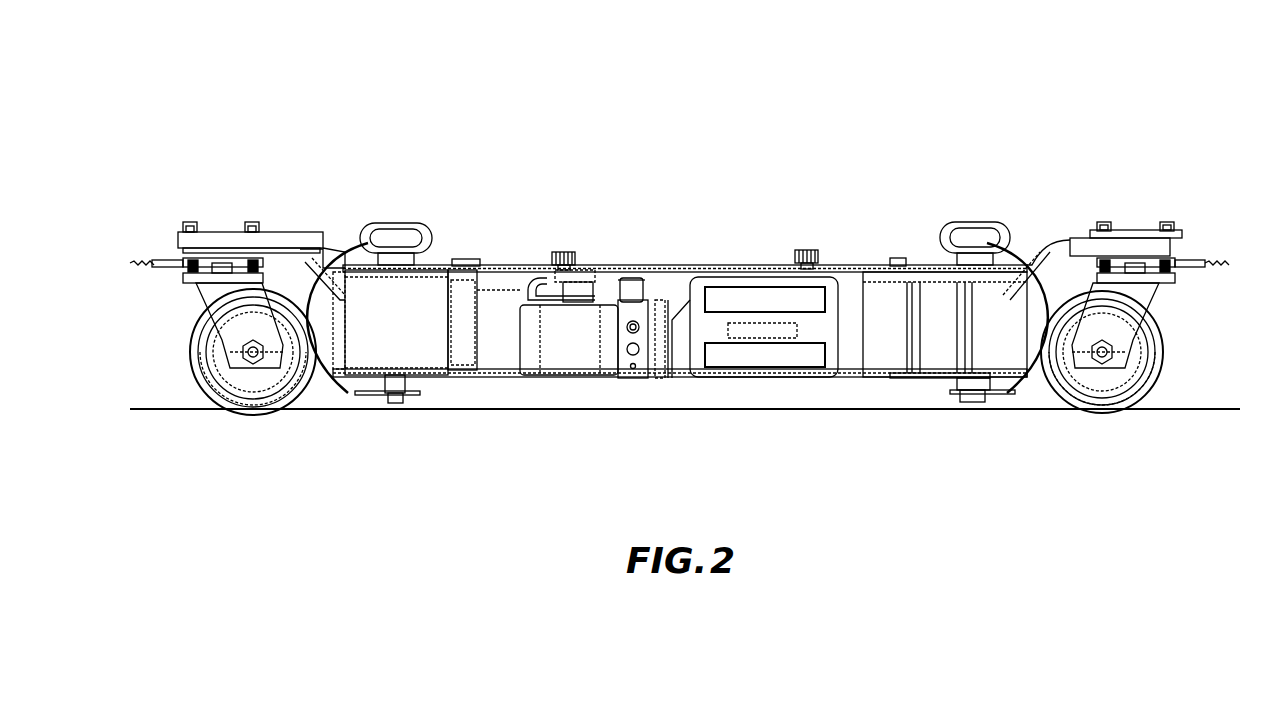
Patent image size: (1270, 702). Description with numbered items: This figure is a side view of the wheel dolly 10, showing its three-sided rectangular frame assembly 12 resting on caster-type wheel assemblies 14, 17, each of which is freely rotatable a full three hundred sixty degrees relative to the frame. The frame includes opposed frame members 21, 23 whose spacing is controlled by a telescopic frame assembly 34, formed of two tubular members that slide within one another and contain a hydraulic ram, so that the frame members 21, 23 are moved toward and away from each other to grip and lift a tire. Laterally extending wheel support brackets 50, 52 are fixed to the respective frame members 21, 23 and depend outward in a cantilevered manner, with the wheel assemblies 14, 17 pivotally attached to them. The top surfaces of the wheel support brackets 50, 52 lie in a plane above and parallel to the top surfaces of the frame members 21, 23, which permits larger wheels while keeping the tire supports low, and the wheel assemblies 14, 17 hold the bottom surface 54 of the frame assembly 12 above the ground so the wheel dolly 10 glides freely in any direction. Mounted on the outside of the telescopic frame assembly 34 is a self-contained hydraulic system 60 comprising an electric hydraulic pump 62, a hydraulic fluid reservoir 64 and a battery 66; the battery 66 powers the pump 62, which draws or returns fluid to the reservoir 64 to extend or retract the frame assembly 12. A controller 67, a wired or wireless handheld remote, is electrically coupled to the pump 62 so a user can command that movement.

The wheel dolly 10 is at (848, 140).
The frame assembly 12 is at (497, 280).
The wheel assembly 14 is at (237, 304).
The wheel assembly 17 is at (1157, 308).
The frame member 21 is at (358, 343).
The frame member 23 is at (1027, 343).
The telescopic frame assembly 34 is at (497, 342).
The wheel support bracket 50 is at (288, 240).
The wheel support bracket 52 is at (1147, 233).
The bottom surface 54 is at (500, 371).
The hydraulic system 60 is at (673, 390).
The electric hydraulic pump 62 is at (570, 356).
The hydraulic fluid reservoir 64 is at (797, 357).
The battery 66 is at (940, 362).
The controller 67 is at (650, 272).